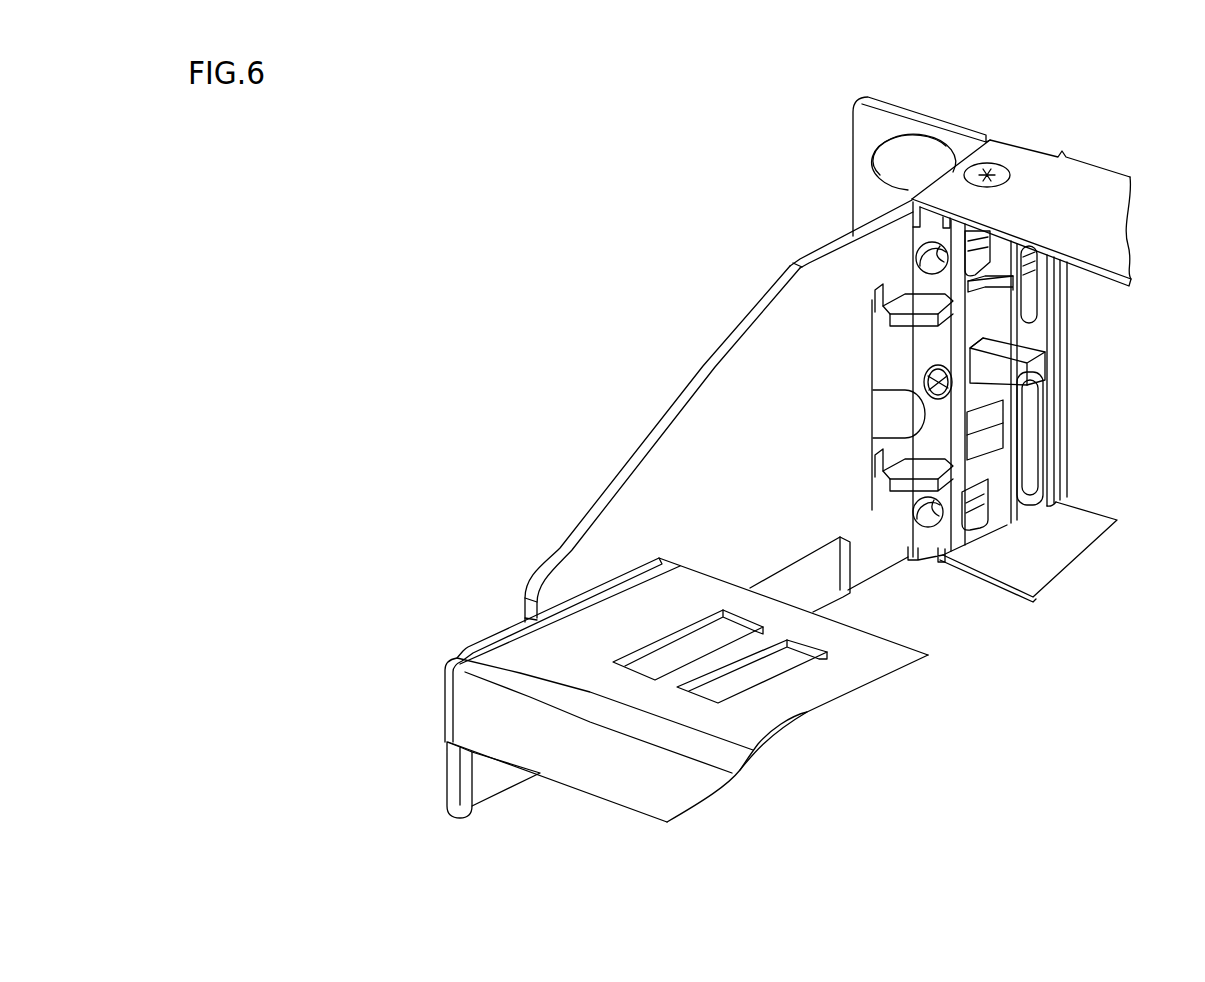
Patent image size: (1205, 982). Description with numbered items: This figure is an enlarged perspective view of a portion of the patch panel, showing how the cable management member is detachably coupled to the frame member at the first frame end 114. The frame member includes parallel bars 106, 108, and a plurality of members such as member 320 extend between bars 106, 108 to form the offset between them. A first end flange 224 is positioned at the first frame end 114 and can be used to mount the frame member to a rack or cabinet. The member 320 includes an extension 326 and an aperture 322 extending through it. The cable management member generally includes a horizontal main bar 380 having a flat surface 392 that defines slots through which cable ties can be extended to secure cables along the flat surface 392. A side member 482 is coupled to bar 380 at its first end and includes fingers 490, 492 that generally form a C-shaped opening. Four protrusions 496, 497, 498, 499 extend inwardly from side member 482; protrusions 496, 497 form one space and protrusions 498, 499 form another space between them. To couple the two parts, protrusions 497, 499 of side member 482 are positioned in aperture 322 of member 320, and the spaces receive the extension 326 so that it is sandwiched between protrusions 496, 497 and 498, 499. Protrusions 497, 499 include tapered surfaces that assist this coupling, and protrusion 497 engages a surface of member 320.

The bar 106 is at (1005, 356).
The bar 108 is at (1028, 561).
The first frame end 114 is at (1021, 179).
The first end flange 224 is at (921, 145).
The member 320 is at (1057, 361).
The aperture 322 is at (1068, 438).
The extension 326 is at (854, 414).
The horizontal main bar 380 is at (686, 706).
The flat surface 392 is at (797, 738).
The side member 482 is at (662, 444).
The finger 490 is at (826, 235).
The finger 492 is at (844, 578).
The protrusion 496 is at (868, 397).
The protrusion 497 is at (1046, 304).
The protrusion 498 is at (868, 472).
The protrusion 499 is at (1051, 450).